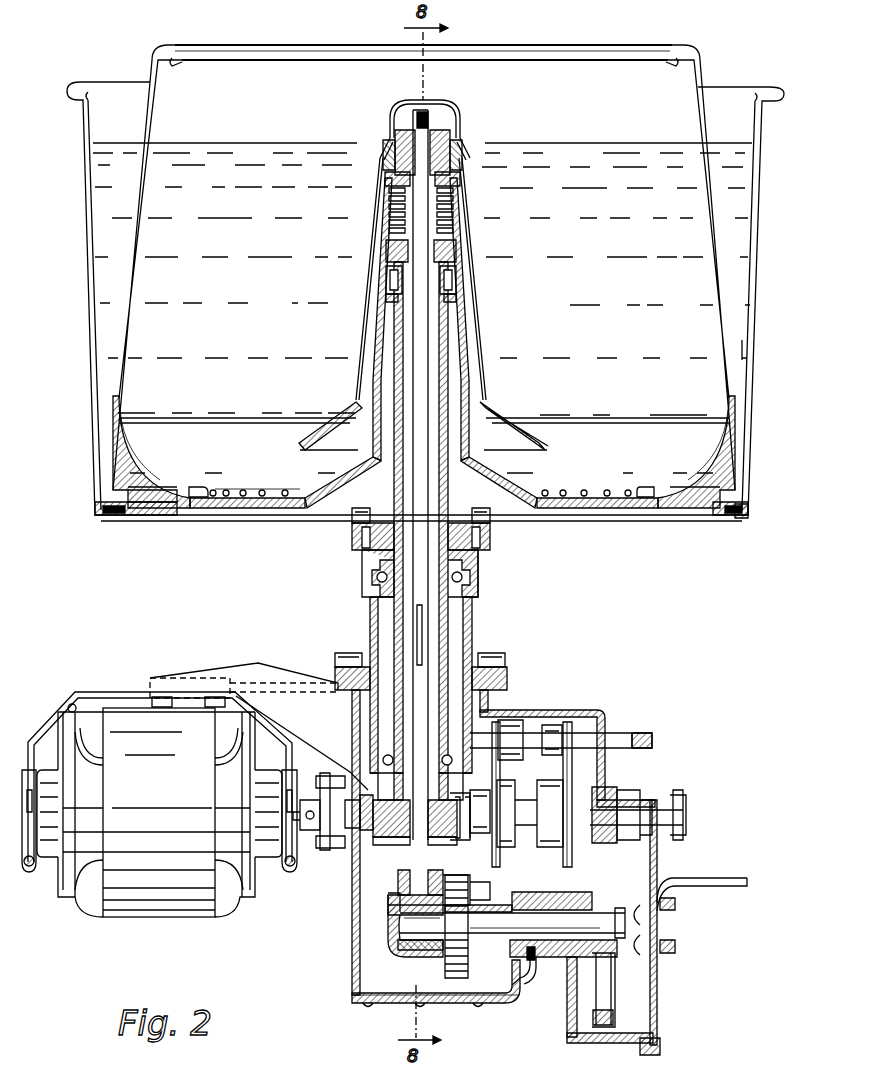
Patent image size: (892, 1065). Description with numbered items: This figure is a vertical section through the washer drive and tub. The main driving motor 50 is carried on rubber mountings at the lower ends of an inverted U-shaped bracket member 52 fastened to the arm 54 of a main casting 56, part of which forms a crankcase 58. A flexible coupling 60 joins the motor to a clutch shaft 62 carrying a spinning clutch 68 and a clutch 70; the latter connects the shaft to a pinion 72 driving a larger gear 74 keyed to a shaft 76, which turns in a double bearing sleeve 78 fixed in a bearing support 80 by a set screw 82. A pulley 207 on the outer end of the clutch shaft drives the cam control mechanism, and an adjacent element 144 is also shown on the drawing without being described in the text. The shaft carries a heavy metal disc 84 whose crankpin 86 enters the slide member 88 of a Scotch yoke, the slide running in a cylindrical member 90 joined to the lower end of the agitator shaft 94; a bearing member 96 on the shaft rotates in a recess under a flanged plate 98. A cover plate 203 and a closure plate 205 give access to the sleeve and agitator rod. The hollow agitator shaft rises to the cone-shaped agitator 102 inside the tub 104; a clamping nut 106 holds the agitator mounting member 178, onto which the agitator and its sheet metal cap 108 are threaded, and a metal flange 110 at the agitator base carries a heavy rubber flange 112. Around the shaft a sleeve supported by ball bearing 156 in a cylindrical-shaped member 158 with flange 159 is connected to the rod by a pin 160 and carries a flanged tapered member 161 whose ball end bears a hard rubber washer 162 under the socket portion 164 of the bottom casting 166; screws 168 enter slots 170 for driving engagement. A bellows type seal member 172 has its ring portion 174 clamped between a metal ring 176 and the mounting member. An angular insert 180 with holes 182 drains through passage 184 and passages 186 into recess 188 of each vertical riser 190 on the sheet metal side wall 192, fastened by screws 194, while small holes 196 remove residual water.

The main driving motor 50 is at (127, 917).
The inverted U-shaped bracket member 52 is at (115, 693).
The arm 54 is at (245, 668).
The main casting 56 is at (354, 900).
The crankcase 58 is at (598, 712).
The flexible coupling 60 is at (312, 852).
The clutch shaft 62 is at (366, 790).
The spinning clutch 68 is at (498, 850).
The clutch 70 is at (550, 848).
The pinion 72 is at (612, 798).
The larger gear 74 is at (610, 1018).
The shaft 76 is at (527, 934).
The double bearing sleeve 78 is at (502, 905).
The bearing support 80 is at (556, 896).
The set screw 82 is at (533, 965).
The heavy metal disc 84 is at (448, 955).
The crankpin 86 is at (392, 928).
The slide member 88 is at (417, 956).
The cylindrical member 90 is at (388, 907).
The agitator shaft 94 is at (422, 856).
The bearing member 96 is at (400, 888).
The flanged plate 98 is at (402, 842).
The agitator 102 is at (482, 300).
The tub 104 is at (178, 337).
The clamping nut 106 is at (445, 112).
The sheet metal cap 108 is at (414, 106).
The metal flange 110 is at (503, 418).
The heavy rubber flange 112 is at (300, 448).
The drive shaft 144 is at (618, 738).
The ball bearing 156 is at (465, 578).
The cylindrical-shaped member 158 is at (374, 636).
The flange 159 is at (503, 672).
The pin 160 is at (421, 638).
The flanged tapered member 161 is at (449, 494).
The ball-shaped hard rubber washer 162 is at (440, 258).
The socket portion 164 is at (392, 260).
The bottom casting 166 is at (163, 517).
The screws 168 is at (456, 276).
The slots 170 is at (392, 296).
The bellows type seal member 172 is at (462, 210).
The ring portion 174 is at (462, 185).
The metal ring 176 is at (390, 190).
The agitator mounting member 178 is at (395, 150).
The angular insert 180 is at (234, 482).
The holes 182 is at (262, 489).
The passage 184 is at (190, 482).
The passages 186 is at (138, 517).
The recess 188 is at (120, 488).
The vertical risers 190 is at (90, 318).
The sheet metal side wall 192 is at (736, 350).
The screws 194 is at (742, 510).
The small holes 196 is at (122, 400).
The cover plate 203 is at (656, 998).
The closure plate 205 is at (388, 1004).
The pulley 207 is at (682, 818).